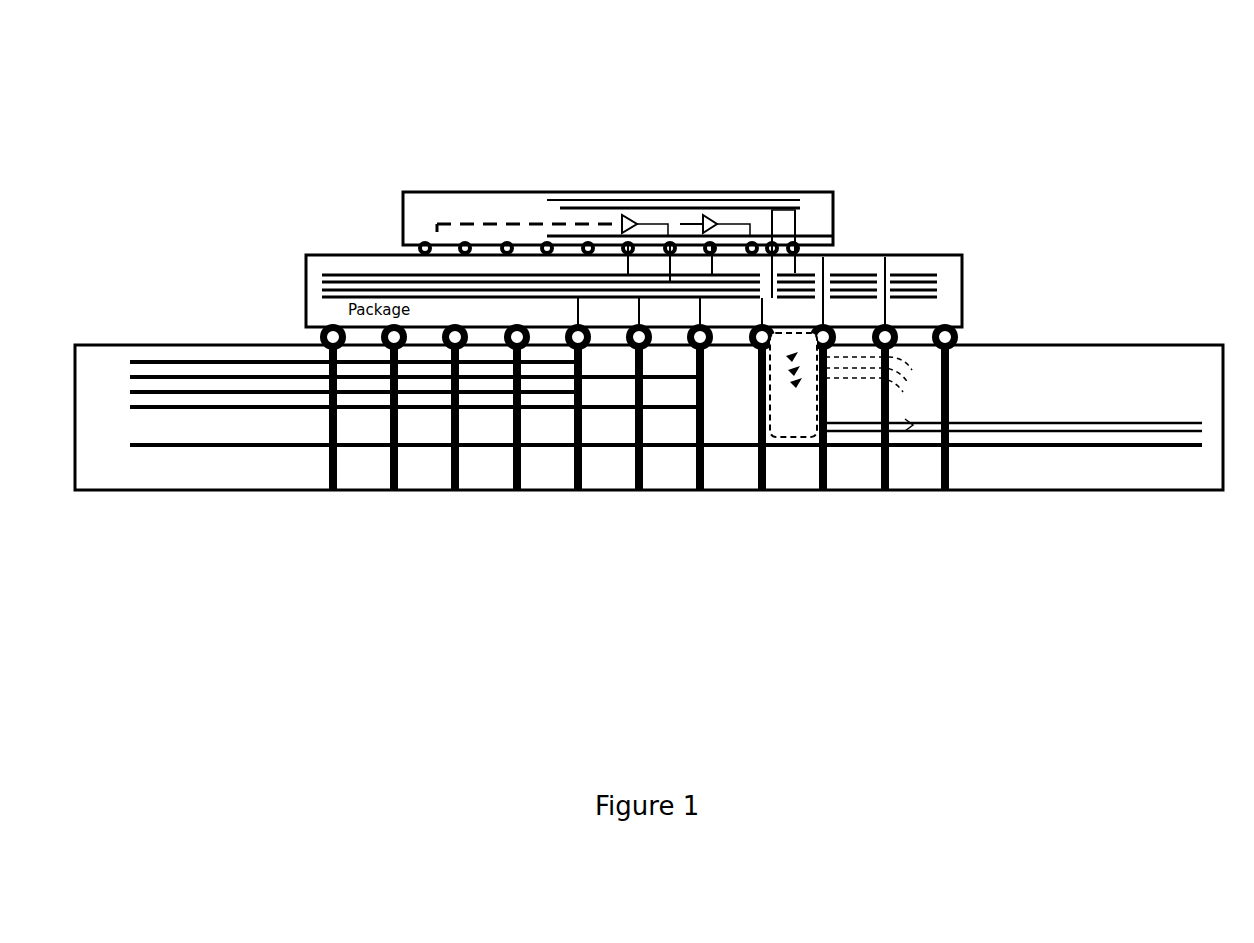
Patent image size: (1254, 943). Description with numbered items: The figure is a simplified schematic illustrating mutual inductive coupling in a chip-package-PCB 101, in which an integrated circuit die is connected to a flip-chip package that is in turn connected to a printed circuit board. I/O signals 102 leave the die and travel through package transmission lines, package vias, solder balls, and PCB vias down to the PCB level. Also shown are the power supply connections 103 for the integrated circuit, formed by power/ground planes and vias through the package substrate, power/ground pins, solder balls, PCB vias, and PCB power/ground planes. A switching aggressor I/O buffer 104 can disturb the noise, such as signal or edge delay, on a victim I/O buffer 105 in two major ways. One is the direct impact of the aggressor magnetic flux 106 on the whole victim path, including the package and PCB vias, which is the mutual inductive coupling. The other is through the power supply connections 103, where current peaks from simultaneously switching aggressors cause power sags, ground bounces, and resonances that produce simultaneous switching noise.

The chip-package-PCB 101 is at (207, 542).
The I/O signals 102 is at (717, 273).
The power supply connections 103 is at (702, 480).
The switching aggressor I/O buffer 104 is at (893, 402).
The victim I/O buffer 105 is at (817, 403).
The aggressor magnetic flux 106 is at (858, 362).